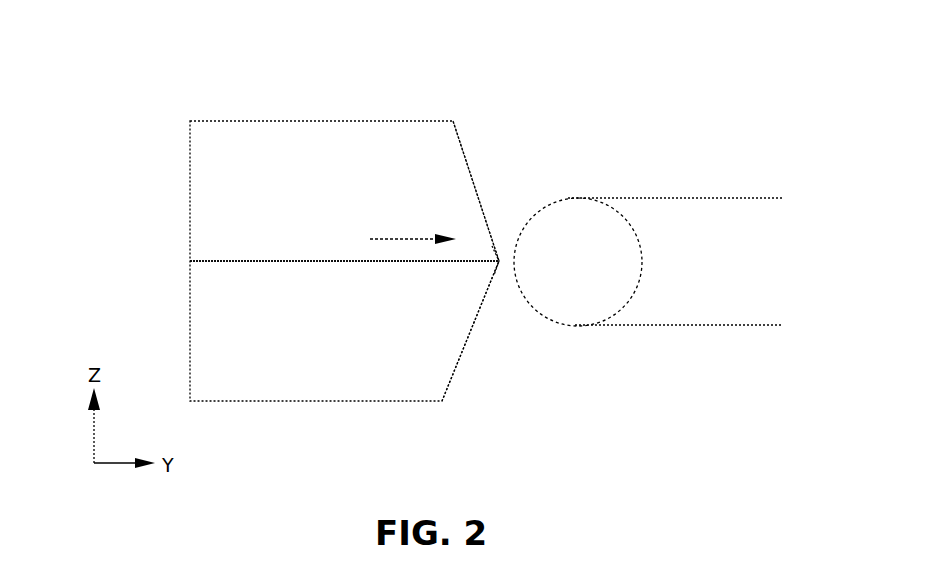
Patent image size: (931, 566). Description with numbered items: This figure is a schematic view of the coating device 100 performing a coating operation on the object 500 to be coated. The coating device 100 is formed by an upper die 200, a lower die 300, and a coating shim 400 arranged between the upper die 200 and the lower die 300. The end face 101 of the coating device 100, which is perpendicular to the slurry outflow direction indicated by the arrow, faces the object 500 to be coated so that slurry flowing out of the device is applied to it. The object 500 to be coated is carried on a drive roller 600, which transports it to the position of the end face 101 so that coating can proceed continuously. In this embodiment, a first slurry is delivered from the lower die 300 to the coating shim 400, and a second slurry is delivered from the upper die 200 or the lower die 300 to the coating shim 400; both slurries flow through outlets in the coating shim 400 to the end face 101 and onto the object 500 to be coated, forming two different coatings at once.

The coating device 100 is at (183, 92).
The end face 101 is at (502, 259).
The upper die 200 is at (442, 170).
The lower die 300 is at (432, 337).
The coating shim 400 is at (450, 262).
The object to be coated 500 is at (620, 197).
The drive roller 600 is at (577, 292).